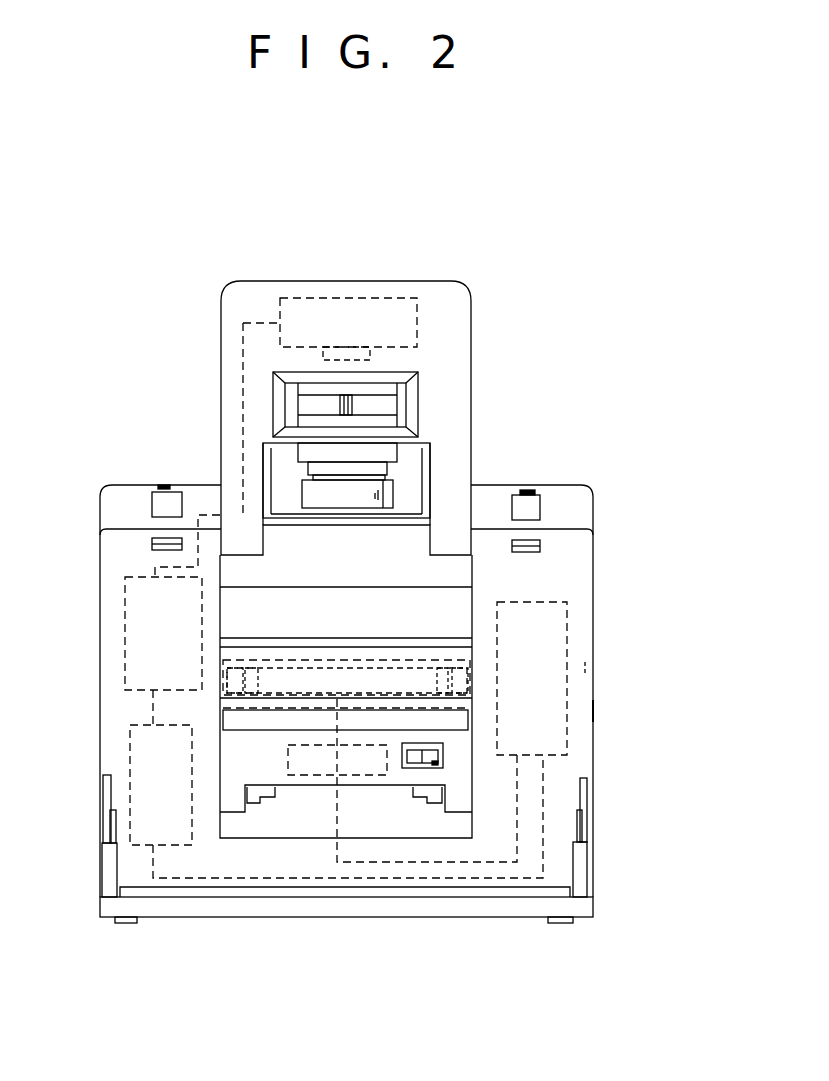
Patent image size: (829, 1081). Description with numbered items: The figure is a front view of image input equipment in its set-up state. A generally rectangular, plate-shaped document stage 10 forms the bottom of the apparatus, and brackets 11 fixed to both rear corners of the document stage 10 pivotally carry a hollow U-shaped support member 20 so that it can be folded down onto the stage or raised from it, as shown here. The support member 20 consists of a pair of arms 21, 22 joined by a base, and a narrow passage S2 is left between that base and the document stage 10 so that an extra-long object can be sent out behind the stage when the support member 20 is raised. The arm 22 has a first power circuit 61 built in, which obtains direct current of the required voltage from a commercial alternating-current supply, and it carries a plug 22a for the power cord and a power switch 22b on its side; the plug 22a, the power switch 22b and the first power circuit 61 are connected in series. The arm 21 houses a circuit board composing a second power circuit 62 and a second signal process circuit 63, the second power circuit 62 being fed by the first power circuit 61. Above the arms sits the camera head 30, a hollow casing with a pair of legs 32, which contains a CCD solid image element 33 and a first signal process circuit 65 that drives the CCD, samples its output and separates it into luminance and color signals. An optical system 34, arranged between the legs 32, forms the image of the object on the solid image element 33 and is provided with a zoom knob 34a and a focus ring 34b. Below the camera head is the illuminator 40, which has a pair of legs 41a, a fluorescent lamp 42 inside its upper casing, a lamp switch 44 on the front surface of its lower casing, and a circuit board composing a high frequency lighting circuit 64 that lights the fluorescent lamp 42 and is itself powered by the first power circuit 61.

The document stage 10 is at (509, 927).
The brackets 11 is at (105, 883).
The U-shaped support member 20 is at (600, 553).
The arm 21 is at (105, 715).
The arm 22 is at (582, 767).
The plug 22a is at (594, 710).
The power switch 22b is at (567, 670).
The camera head 30 is at (428, 279).
The legs 32 is at (232, 530).
The solid image element 33 is at (368, 342).
The optical system 34 is at (393, 410).
The zoom knob 34a is at (342, 408).
The focus ring 34b is at (312, 488).
The illuminator 40 is at (221, 766).
The legs 41a is at (235, 802).
The fluorescent lamp 42 is at (407, 682).
The lamp switch 44 is at (443, 763).
The first power circuit 61 is at (568, 633).
The second power circuit 62 is at (128, 757).
The second signal process circuit 63 is at (137, 652).
The high frequency lighting circuit 64 is at (312, 775).
The first signal process circuit 65 is at (328, 296).
The passage S2 is at (203, 897).